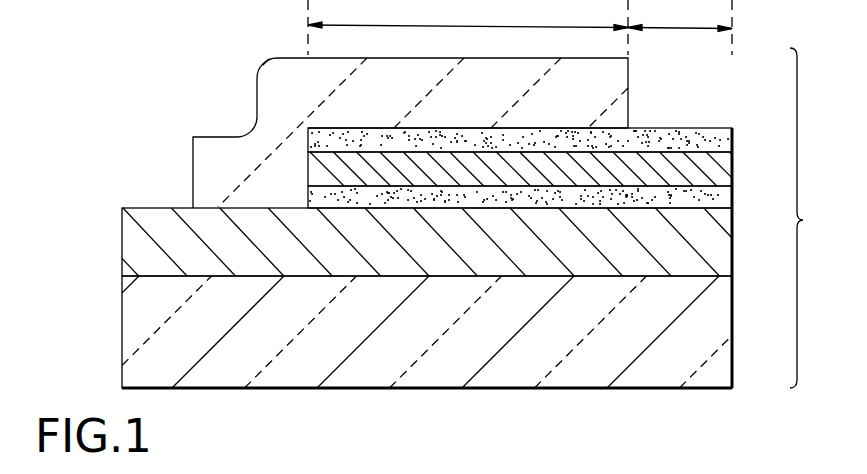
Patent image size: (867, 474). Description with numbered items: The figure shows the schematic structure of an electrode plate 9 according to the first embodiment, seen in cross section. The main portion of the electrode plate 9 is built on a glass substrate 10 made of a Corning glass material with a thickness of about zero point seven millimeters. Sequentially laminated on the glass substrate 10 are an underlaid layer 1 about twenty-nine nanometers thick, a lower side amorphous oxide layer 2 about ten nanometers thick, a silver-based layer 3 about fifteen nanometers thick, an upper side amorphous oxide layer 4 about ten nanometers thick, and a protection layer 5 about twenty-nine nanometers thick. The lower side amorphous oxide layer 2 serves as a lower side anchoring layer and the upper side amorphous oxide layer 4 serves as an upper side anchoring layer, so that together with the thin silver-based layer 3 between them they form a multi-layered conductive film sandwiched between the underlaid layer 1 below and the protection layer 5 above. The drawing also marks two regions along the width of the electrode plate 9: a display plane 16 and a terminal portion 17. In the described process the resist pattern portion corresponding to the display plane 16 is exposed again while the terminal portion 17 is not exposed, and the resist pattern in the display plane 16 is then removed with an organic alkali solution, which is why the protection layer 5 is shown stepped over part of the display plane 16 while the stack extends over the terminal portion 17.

The underlaid layer 1 is at (733, 247).
The lower side amorphous oxide layer 2 is at (733, 200).
The silver-based layer 3 is at (733, 172).
The upper side amorphous oxide layer 4 is at (733, 143).
The protection layer 5 is at (215, 150).
The electrode plate 9 is at (807, 218).
The glass substrate 10 is at (718, 330).
The display plane 16 is at (468, 27).
The terminal portion 17 is at (680, 27).